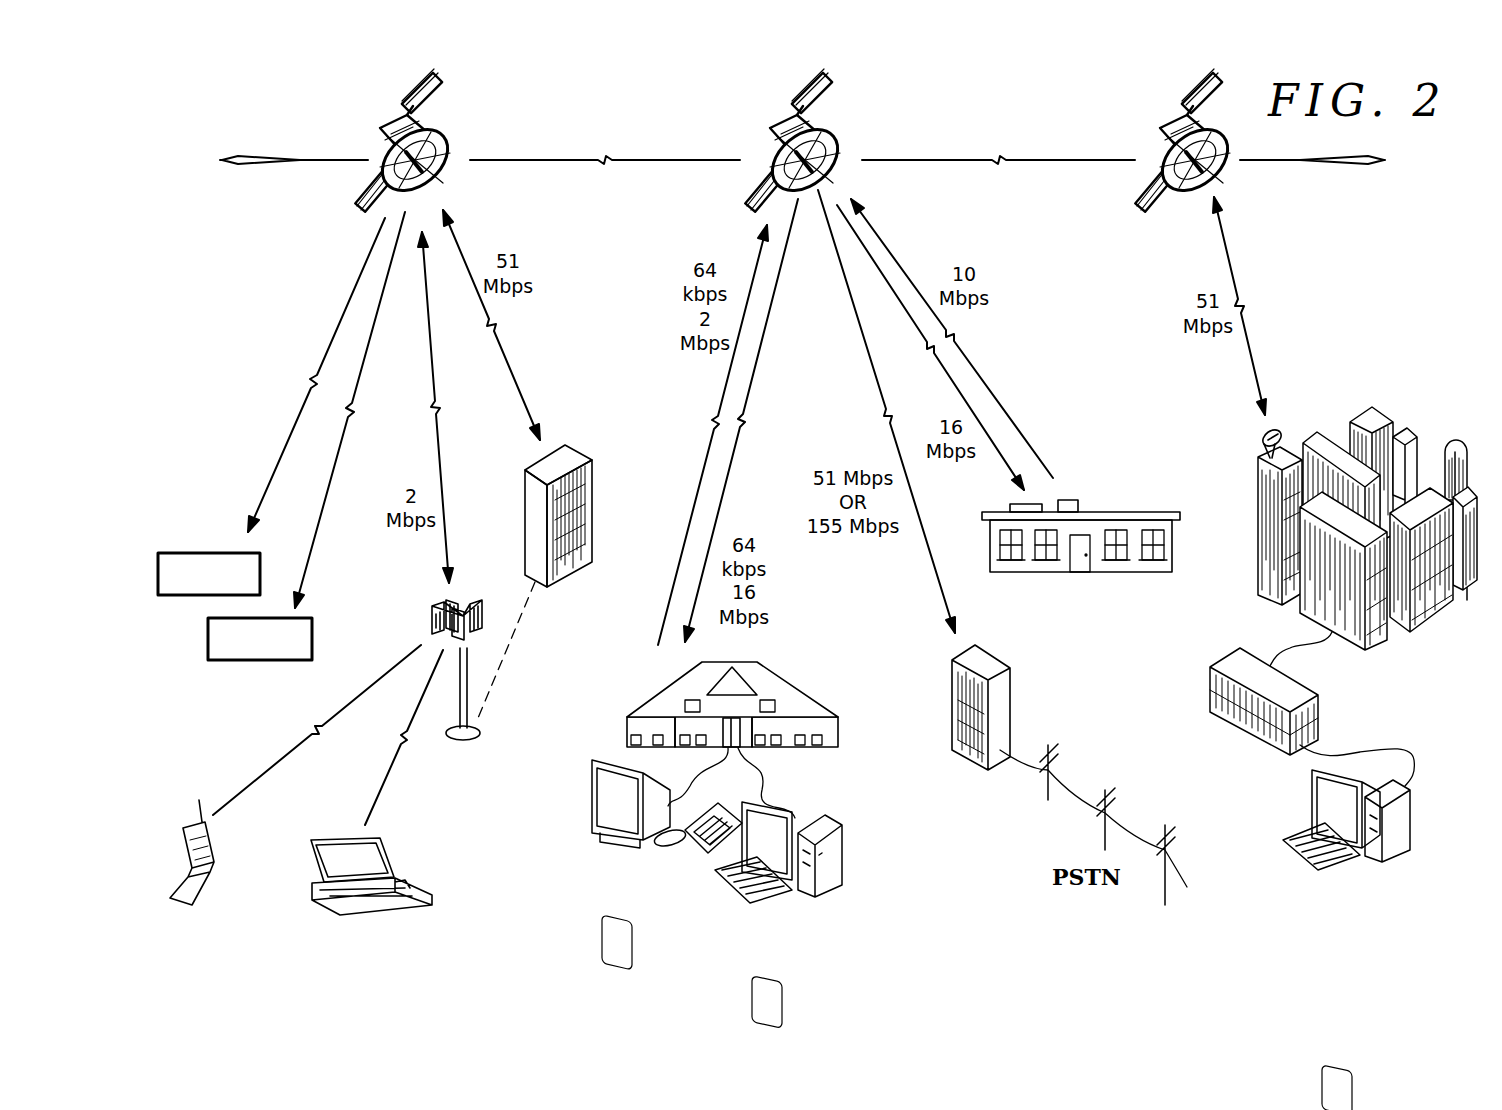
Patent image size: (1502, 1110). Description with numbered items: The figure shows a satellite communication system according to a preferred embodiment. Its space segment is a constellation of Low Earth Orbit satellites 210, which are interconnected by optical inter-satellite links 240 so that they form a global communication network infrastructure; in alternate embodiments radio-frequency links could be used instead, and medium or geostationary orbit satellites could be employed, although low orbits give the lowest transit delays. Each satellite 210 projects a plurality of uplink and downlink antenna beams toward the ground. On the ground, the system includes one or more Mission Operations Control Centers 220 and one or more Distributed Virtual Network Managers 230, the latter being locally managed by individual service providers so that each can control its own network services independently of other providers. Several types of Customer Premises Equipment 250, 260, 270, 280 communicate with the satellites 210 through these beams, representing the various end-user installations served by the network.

The Low Earth Orbit satellite 210 is at (386, 129).
The Mission Operations Control Center 220 is at (208, 553).
The Distributed Virtual Network Manager 230 is at (259, 661).
The inter-satellite link 240 is at (536, 159).
The Customer Premises Equipment 250 is at (523, 520).
The Customer Premises Equipment 260 is at (624, 733).
The Customer Premises Equipment 270 is at (1078, 575).
The Customer Premises Equipment 280 is at (1256, 482).